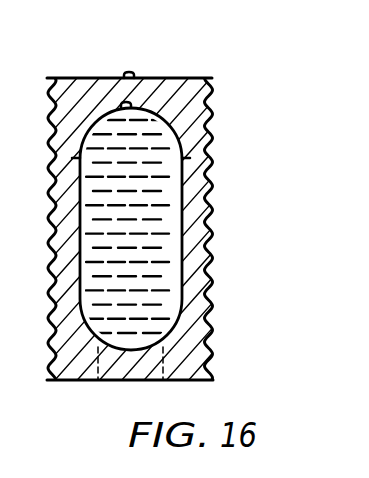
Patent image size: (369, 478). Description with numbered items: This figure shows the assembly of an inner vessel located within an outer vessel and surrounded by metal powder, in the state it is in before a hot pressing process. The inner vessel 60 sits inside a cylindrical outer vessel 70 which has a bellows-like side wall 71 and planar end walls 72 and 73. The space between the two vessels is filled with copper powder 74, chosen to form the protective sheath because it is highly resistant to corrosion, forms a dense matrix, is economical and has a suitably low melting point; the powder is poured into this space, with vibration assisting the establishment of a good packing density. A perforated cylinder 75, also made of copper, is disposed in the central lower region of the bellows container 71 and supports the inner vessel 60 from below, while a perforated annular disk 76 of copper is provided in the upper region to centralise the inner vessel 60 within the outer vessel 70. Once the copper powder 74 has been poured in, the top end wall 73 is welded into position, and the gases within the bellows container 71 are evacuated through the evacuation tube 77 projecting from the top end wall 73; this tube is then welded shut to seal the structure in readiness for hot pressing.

The inner vessel 60 is at (195, 220).
The outer vessel 70 is at (219, 342).
The bellows-like side wall 71 is at (215, 301).
The end wall 72 is at (192, 384).
The top end wall 73 is at (177, 75).
The copper powder 74 is at (192, 127).
The perforated cylinder 75 is at (97, 350).
The perforated annular disk 76 is at (190, 160).
The evacuation tube 77 is at (138, 69).